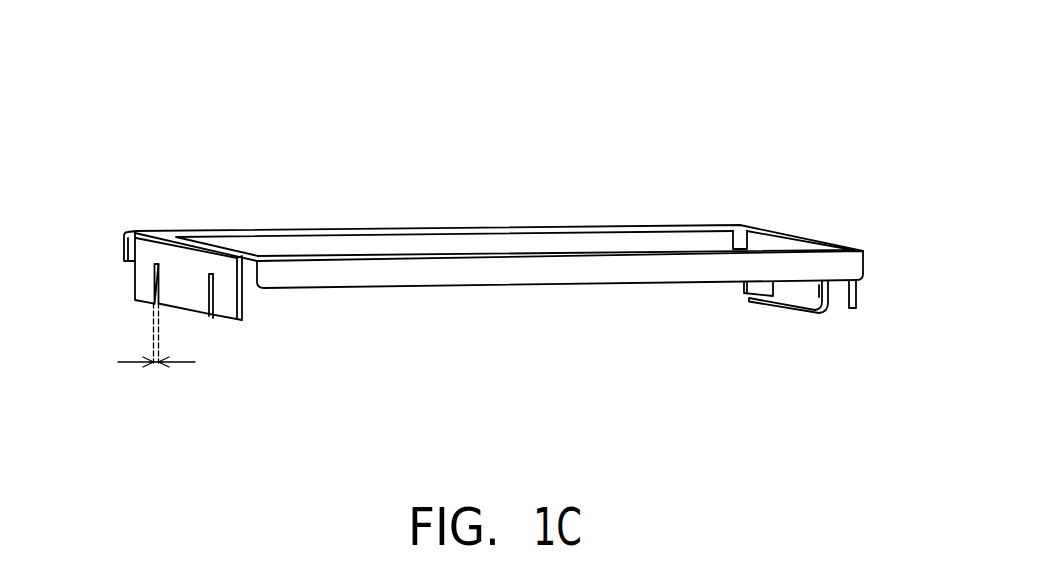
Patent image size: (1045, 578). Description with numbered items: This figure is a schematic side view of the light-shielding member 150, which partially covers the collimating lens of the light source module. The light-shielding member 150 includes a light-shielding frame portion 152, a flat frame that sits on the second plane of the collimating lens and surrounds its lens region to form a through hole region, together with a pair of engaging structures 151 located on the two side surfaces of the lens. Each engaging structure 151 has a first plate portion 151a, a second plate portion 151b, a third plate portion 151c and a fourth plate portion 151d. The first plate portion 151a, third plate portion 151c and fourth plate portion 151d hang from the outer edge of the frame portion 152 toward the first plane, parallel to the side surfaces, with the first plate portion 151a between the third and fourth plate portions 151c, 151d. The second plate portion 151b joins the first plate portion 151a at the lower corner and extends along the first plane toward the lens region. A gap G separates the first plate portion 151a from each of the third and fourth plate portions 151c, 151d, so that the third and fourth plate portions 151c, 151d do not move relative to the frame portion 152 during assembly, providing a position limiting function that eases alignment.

The light-shielding member 150 is at (918, 453).
The engaging structure 151 is at (842, 32).
The first plate portion 151a is at (223, 373).
The second plate portion 151b is at (742, 350).
The third plate portion 151c is at (231, 300).
The fourth plate portion 151d is at (97, 305).
The light-shielding frame portion 152 is at (201, 231).
The gap G is at (159, 364).